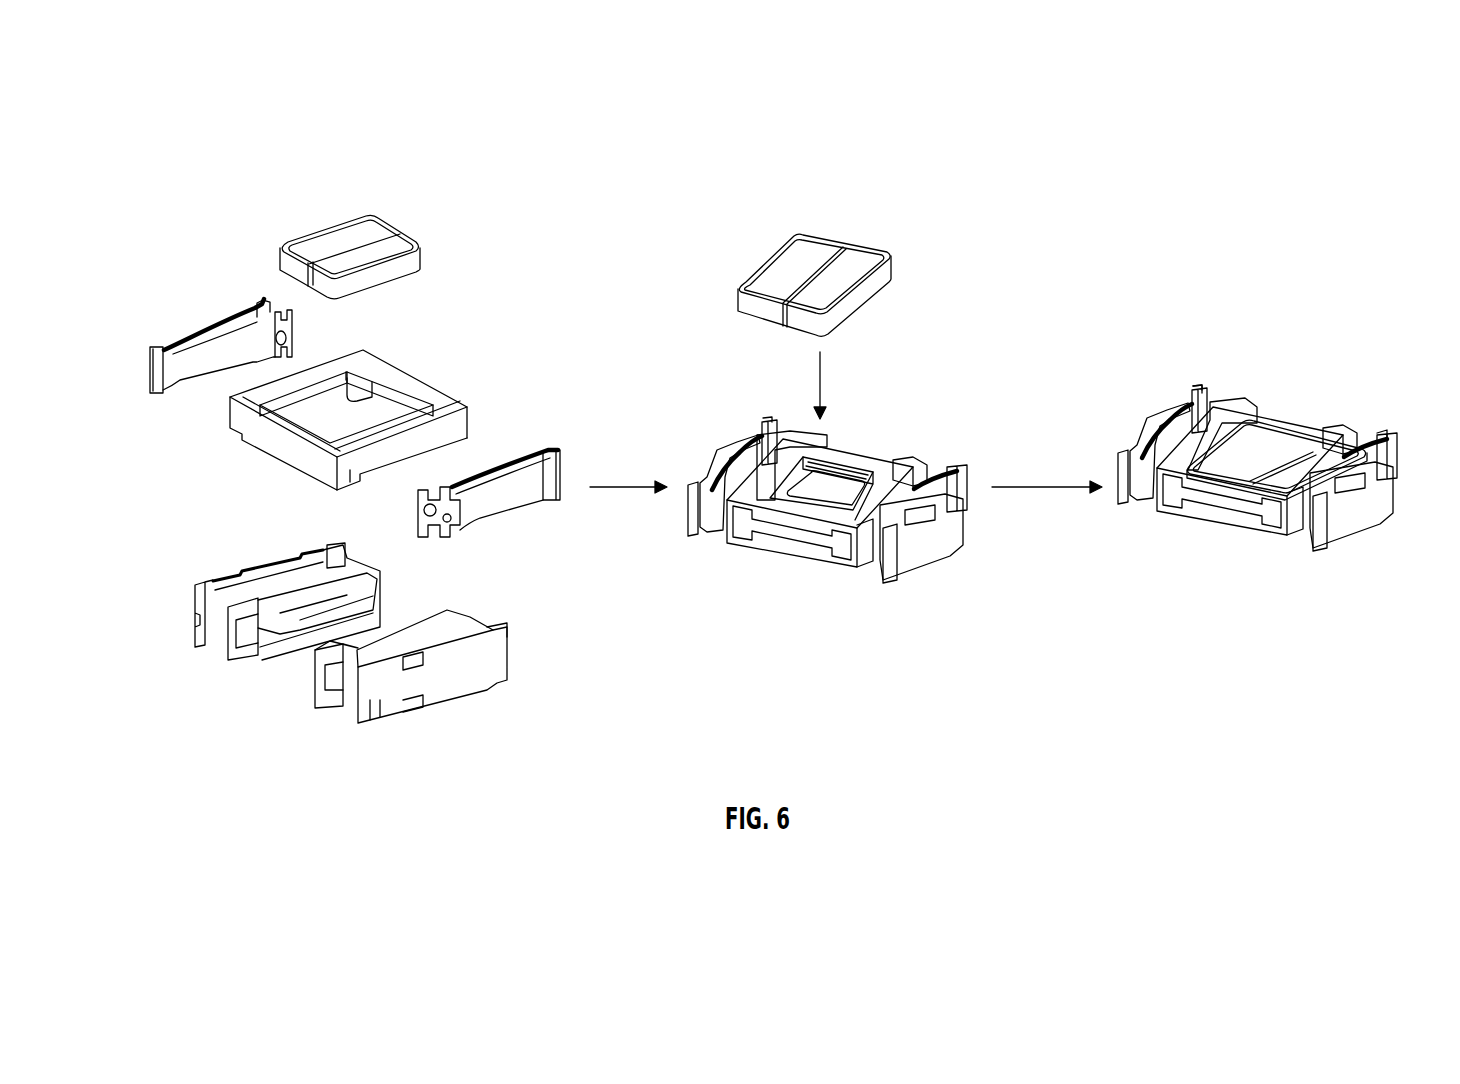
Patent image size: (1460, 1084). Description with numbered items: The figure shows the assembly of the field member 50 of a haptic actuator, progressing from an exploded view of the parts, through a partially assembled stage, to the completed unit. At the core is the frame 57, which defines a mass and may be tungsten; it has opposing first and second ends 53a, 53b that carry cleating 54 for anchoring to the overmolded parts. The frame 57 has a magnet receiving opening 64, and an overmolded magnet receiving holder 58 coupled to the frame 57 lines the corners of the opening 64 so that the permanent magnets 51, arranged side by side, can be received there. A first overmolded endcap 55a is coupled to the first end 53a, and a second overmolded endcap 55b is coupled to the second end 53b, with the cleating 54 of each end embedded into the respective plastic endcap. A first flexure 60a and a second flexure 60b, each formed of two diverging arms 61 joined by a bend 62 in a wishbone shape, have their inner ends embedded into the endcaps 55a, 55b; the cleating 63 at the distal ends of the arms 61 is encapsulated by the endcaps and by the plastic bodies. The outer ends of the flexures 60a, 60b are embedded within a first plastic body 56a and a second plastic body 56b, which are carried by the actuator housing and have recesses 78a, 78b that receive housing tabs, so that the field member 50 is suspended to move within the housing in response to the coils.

The field member 50 is at (430, 363).
The permanent magnets 51 is at (350, 232).
The first end 53a is at (350, 357).
The second end 53b is at (371, 460).
The cleating 54 is at (373, 352).
The first overmolded endcap 55a is at (276, 640).
The second overmolded endcap 55b is at (332, 714).
The first plastic body 56a is at (194, 643).
The second plastic body 56b is at (427, 714).
The frame 57 is at (273, 438).
The overmolded magnet receiving holder 58 is at (813, 470).
The first flexure 60a is at (647, 410).
The second flexure 60b is at (530, 520).
The diverging arms 61 is at (182, 373).
The bend 62 is at (152, 377).
The cleating 63 is at (265, 307).
The magnet receiving opening 64 is at (362, 420).
The recess 78a is at (303, 558).
The recess 78b is at (397, 714).